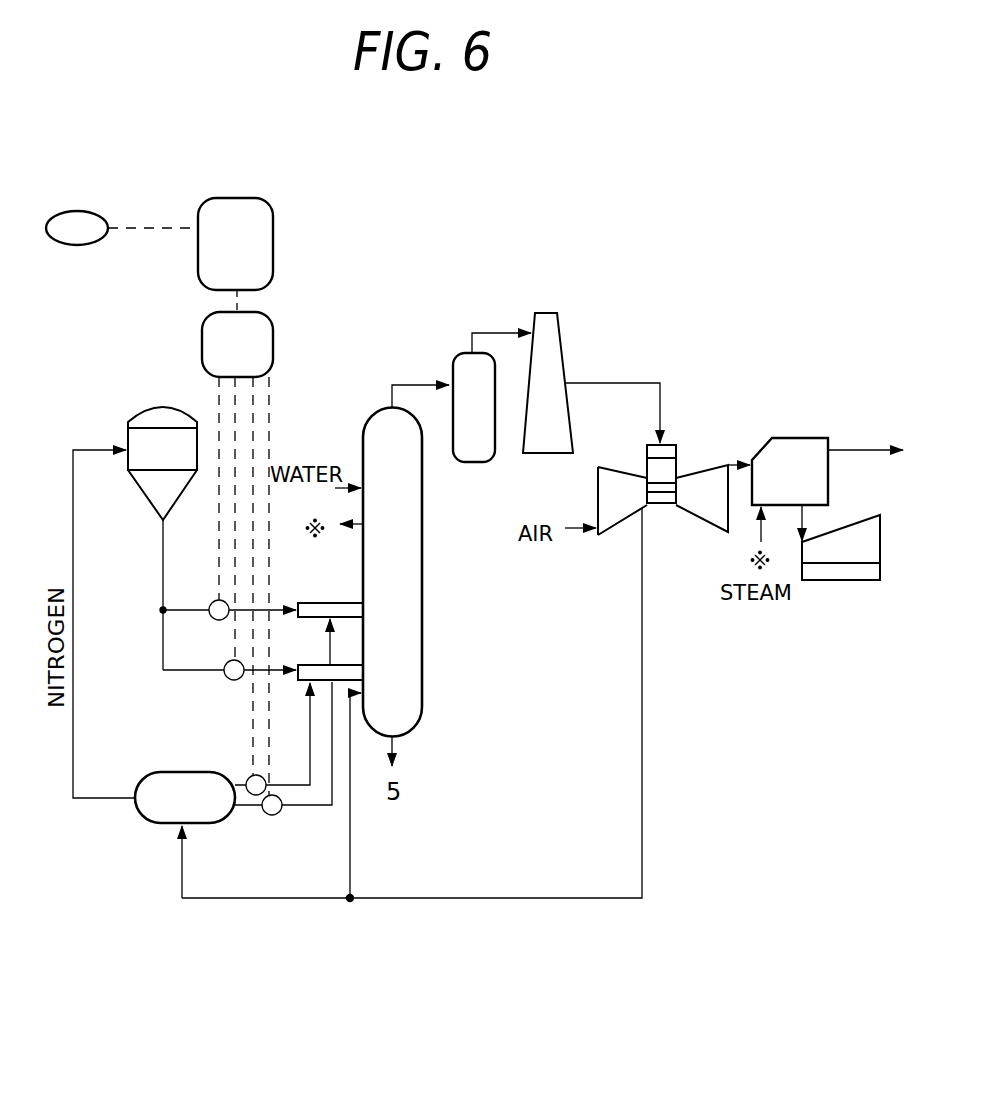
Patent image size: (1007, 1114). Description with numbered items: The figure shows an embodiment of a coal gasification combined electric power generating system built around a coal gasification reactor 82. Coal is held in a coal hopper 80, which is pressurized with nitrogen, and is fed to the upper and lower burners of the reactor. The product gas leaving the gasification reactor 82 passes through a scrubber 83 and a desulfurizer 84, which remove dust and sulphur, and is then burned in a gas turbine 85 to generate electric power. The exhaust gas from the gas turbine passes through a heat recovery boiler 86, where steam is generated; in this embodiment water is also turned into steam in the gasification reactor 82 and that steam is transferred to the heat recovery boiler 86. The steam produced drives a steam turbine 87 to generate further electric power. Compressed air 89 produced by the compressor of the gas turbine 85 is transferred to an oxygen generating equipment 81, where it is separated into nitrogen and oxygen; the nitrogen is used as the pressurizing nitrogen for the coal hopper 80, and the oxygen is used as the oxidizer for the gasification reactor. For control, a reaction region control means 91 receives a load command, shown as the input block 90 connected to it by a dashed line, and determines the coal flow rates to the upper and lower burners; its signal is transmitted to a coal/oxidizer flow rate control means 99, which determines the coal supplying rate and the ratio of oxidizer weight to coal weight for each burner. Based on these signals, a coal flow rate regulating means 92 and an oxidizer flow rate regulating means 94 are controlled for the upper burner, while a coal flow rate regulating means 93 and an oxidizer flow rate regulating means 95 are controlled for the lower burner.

The coal hopper 80 is at (170, 407).
The oxygen generating equipment 81 is at (142, 821).
The coal gasification reactor 82 is at (422, 632).
The scrubber 83 is at (468, 462).
The desulfurizer 84 is at (542, 454).
The gas turbine 85 is at (690, 518).
The heat recovery boiler 86 is at (812, 438).
The steam turbine 87 is at (862, 581).
The compressed air 89 is at (644, 798).
The sensor 90 is at (70, 211).
The reaction region control means 91 is at (247, 198).
The coal flow rate regulating means 92 is at (213, 620).
The coal flow rate regulating means 93 is at (227, 680).
The oxidizer flow rate regulating means 94 is at (248, 777).
The oxidizer flow rate regulating means 95 is at (275, 815).
The coal/oxidizer flow rate control means 99 is at (204, 325).